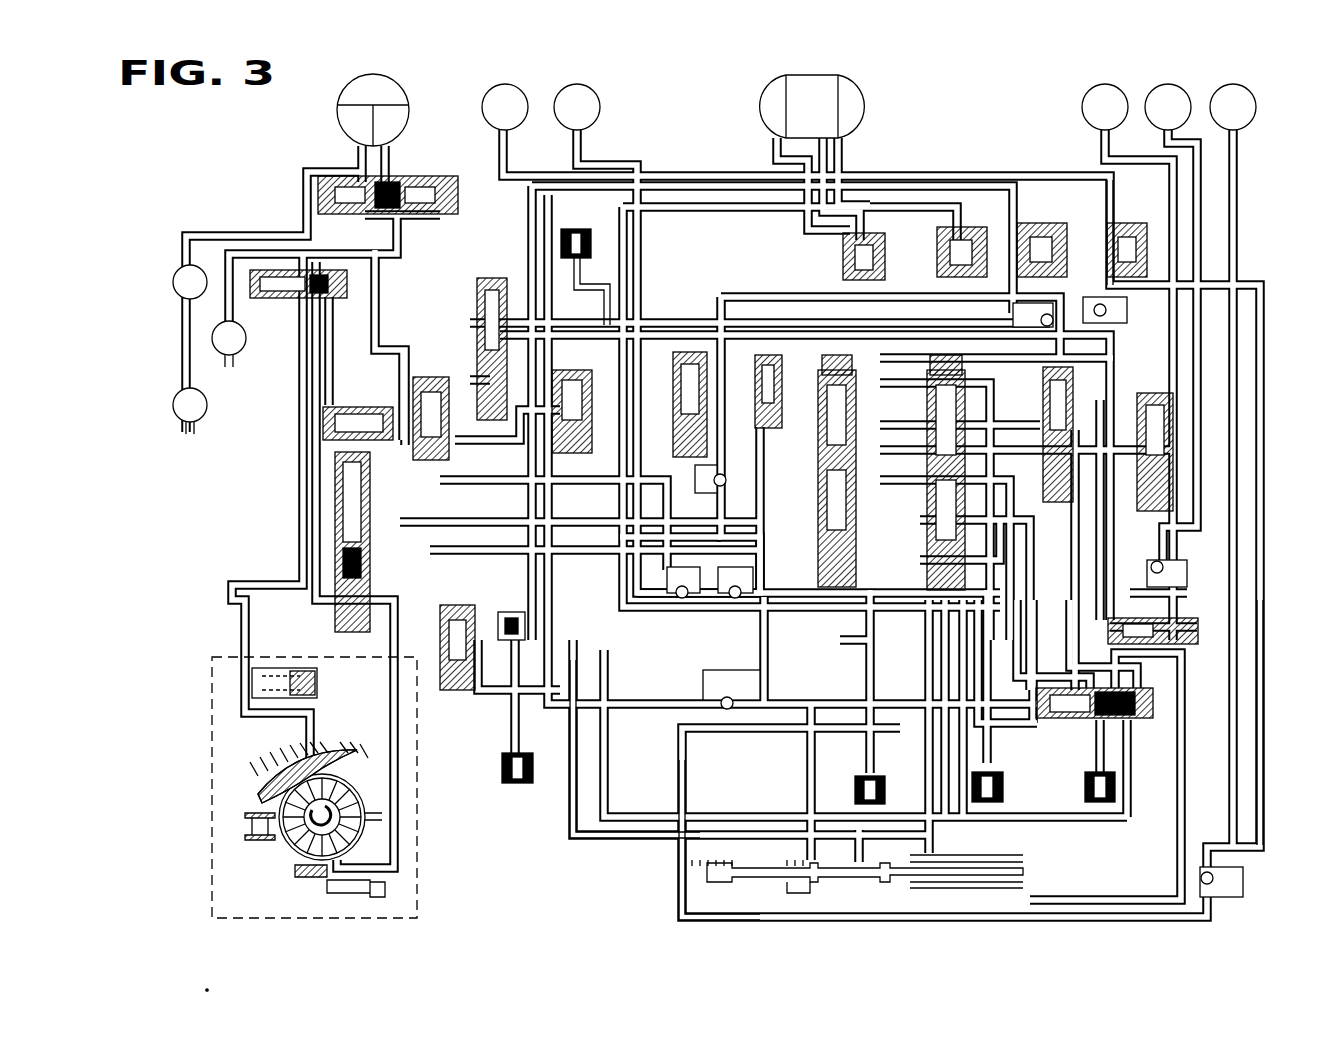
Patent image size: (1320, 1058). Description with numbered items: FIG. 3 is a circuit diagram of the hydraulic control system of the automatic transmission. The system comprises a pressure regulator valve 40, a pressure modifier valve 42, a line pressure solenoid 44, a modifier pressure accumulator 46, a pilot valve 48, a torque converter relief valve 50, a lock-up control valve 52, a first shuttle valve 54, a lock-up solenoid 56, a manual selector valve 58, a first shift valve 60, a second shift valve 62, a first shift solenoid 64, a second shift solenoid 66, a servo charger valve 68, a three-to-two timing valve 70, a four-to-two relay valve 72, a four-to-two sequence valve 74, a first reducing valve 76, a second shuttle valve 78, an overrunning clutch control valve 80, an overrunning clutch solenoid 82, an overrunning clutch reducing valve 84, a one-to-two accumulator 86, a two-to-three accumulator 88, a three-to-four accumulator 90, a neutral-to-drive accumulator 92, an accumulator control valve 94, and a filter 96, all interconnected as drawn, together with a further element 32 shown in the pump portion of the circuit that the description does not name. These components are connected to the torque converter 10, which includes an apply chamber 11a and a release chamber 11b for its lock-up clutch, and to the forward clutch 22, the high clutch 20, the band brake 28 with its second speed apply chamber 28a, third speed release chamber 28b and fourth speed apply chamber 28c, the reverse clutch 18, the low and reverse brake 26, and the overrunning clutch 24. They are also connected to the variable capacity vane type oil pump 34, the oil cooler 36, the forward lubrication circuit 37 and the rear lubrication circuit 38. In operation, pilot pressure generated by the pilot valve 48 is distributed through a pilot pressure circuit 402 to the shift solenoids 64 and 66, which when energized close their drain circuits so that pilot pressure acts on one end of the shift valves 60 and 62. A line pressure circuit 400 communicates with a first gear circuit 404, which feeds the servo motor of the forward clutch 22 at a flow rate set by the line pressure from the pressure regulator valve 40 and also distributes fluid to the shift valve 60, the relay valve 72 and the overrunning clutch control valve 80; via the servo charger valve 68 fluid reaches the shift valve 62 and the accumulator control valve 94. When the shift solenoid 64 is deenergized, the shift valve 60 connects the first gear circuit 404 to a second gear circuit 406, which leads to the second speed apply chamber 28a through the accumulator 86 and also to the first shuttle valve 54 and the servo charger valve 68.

The torque converter 10 is at (402, 73).
The apply chamber 11a is at (409, 120).
The release chamber 11b is at (337, 122).
The reverse clutch 18 is at (508, 84).
The high clutch 20 is at (584, 84).
The forward clutch 22 is at (1112, 84).
The overrunning clutch 24 is at (1176, 84).
The low & reverse brake 26 is at (1241, 84).
The band brake 28 is at (815, 89).
The second speed apply chamber 28a is at (755, 105).
The third speed release chamber 28b is at (810, 75).
The fourth speed apply chamber 28c is at (872, 105).
The pressure relief valve 32 is at (322, 698).
The variable capacity vane type oil pump 34 is at (288, 858).
The oil cooler 36 is at (173, 283).
The forward lubrication circuit 37 is at (243, 350).
The rear lubrication circuit 38 is at (175, 398).
The pressure regulator valve 40 is at (332, 608).
The pressure modifier valve 42 is at (430, 375).
The line pressure solenoid 44 is at (498, 785).
The modifier pressure accumulator 46 is at (353, 403).
The pilot valve 48 is at (478, 672).
The torque converter relief valve 50 is at (340, 305).
The lock-up control valve 52 is at (450, 222).
The first shuttle valve 54 is at (690, 460).
The lock-up solenoid 56 is at (600, 245).
The manual selector valve 58 is at (950, 853).
The first shift valve 60 is at (913, 355).
The second shift valve 62 is at (860, 362).
The first shift solenoid 64 is at (1006, 777).
The second shift solenoid 66 is at (888, 772).
The servo charger valve 68 is at (478, 318).
The 3-2 timing valve 70 is at (770, 435).
The 4-2 relay valve 72 is at (945, 600).
The 4-2 sequence valve 74 is at (858, 560).
The first reducing valve 76 is at (1185, 612).
The second shuttle valve 78 is at (1087, 727).
The overrunning clutch control valve 80 is at (1075, 478).
The overrunning clutch solenoid 82 is at (1103, 806).
The overrunning clutch reducing valve 84 is at (1157, 390).
The 1-2 accumulator 86 is at (978, 232).
The 2-3 accumulator 88 is at (1060, 232).
The 3-4 accumulator 90 is at (885, 248).
The N-D accumulator 92 is at (1135, 230).
The accumulator control valve 94 is at (573, 368).
The filter 96 is at (512, 642).
The line pressure circuit 400 is at (620, 842).
The pilot pressure circuit 402 is at (758, 817).
The first gear circuit 404 is at (1255, 745).
The second gear circuit 406 is at (985, 300).